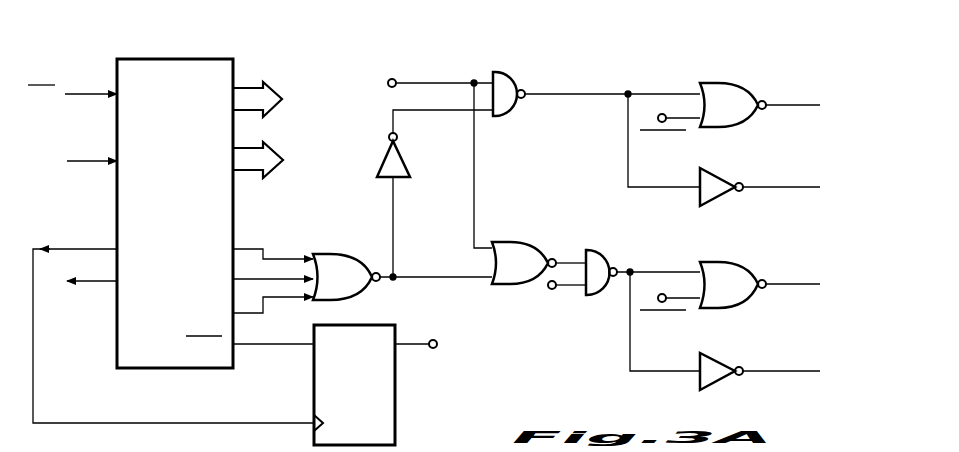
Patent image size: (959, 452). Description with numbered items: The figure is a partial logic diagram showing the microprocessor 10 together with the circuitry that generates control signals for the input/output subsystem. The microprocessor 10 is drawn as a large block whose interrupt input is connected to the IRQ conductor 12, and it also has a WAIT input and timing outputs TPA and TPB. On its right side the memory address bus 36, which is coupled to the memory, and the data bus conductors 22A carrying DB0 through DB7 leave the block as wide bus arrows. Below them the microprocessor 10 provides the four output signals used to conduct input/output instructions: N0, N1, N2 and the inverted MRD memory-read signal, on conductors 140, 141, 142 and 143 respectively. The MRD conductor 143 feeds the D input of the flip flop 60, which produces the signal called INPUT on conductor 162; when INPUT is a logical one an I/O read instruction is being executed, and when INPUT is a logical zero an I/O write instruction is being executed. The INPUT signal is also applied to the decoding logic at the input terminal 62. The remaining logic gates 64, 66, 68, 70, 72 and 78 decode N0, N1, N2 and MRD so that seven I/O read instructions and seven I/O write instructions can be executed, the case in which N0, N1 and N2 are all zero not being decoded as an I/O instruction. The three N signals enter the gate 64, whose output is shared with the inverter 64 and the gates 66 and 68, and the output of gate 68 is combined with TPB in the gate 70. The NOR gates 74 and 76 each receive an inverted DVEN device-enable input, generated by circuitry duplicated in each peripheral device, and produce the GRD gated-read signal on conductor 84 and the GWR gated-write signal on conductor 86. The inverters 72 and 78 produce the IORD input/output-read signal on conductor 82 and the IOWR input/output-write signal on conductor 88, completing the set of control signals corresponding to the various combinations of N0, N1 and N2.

The microprocessor 10 is at (205, 59).
The IRQ conductor 12 is at (80, 94).
The memory address bus 36 is at (277, 82).
The data bus conductors 22A is at (277, 142).
The N0 conductor 140 is at (250, 249).
The N1 conductor 141 is at (290, 279).
The N2 conductor 142 is at (273, 313).
The MRD conductor 143 is at (280, 344).
The logic gate 64 is at (350, 246).
The input terminal 62 is at (394, 78).
The logic gate 66 is at (512, 74).
The logic gate 68 is at (533, 230).
The logic gate 70 is at (600, 252).
The NOR gate 74 is at (725, 83).
The GRD conductor 84 is at (778, 105).
The logic gate 72 is at (715, 168).
The IORD conductor 82 is at (768, 187).
The NOR gate 76 is at (725, 262).
The GWR conductor 86 is at (782, 284).
The logic gate 78 is at (715, 353).
The IOWR conductor 88 is at (770, 371).
The flip flop 60 is at (395, 438).
The INPUT conductor 162 is at (433, 348).